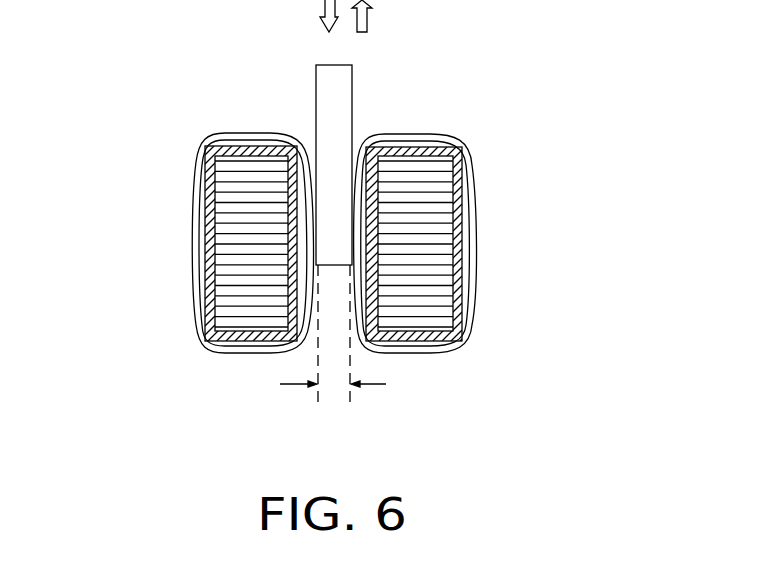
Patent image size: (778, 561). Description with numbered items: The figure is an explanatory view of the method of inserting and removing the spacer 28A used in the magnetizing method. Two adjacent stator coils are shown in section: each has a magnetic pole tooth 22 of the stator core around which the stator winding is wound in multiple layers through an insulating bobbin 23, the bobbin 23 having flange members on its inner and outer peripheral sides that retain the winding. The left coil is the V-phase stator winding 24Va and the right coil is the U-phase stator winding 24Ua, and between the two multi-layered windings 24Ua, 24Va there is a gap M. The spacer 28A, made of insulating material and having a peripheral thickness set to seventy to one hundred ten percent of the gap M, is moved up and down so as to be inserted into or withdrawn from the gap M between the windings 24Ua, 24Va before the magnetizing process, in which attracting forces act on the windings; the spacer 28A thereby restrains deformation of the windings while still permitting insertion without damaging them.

The spacer 28A is at (342, 100).
The gap between the multi-layered windings M is at (334, 386).
The V-phase stator winding 24Va is at (193, 258).
The U-phase stator winding 24Ua is at (478, 248).
The insulating bobbin 23 is at (207, 212).
The magnetic pole teeth 22 is at (250, 308).